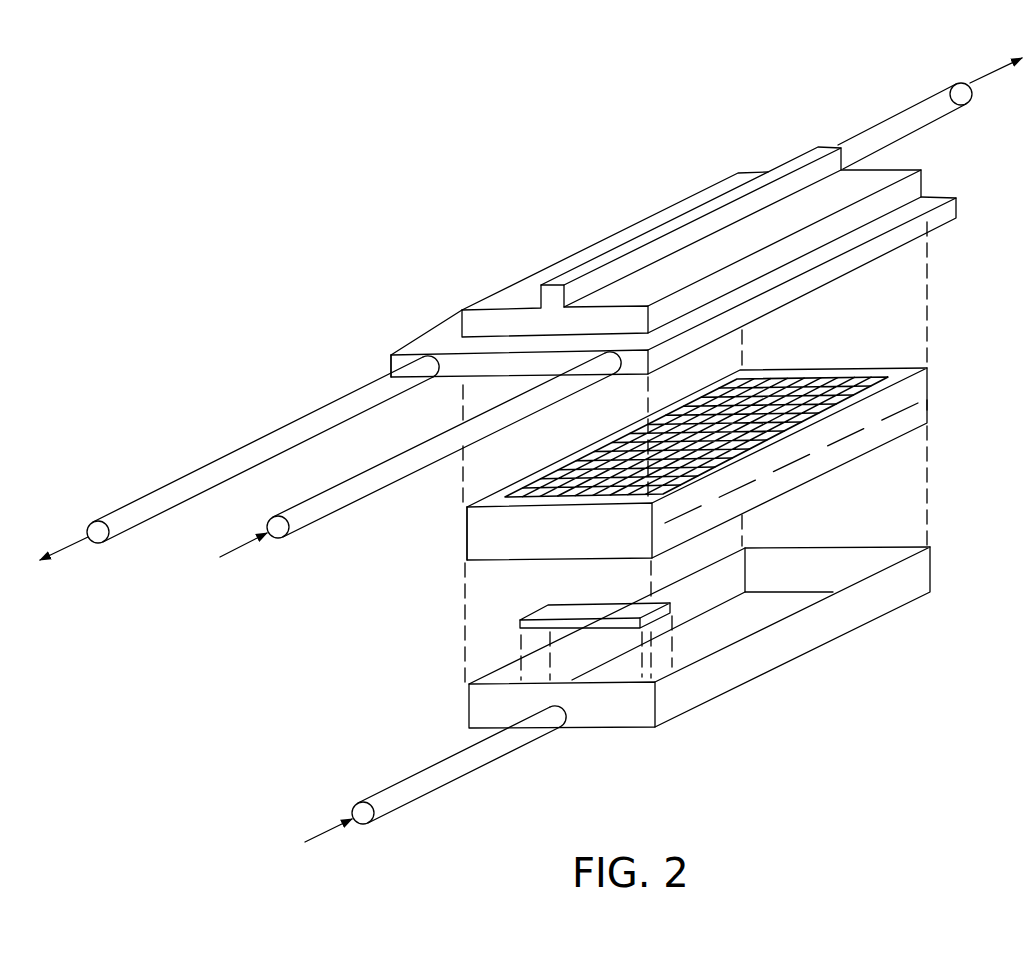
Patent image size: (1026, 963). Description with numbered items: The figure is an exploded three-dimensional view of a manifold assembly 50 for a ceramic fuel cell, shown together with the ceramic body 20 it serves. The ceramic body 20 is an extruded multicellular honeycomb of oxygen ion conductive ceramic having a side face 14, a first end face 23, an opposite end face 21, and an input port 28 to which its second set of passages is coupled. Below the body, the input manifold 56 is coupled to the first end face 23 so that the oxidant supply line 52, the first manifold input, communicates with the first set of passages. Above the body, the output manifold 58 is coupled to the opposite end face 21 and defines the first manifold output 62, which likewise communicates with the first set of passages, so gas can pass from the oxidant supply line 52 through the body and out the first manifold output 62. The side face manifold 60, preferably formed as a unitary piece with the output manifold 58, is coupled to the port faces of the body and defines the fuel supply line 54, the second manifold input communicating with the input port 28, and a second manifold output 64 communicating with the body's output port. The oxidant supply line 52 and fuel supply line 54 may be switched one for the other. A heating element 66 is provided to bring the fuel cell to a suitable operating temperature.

The manifold assembly 50 is at (317, 298).
The first manifold output 62 is at (949, 92).
The output manifold 58 is at (818, 147).
The side face manifold 60 is at (957, 198).
The second manifold output 64 is at (193, 477).
The fuel supply line 54 is at (300, 520).
The end face 21 is at (888, 370).
The input port 28 is at (927, 405).
The first end face 23 is at (885, 447).
The ceramic body 20 is at (455, 526).
The side face 14 is at (466, 556).
The heating element 66 is at (547, 607).
The input manifold 56 is at (782, 663).
The oxidant supply line 52 is at (385, 810).